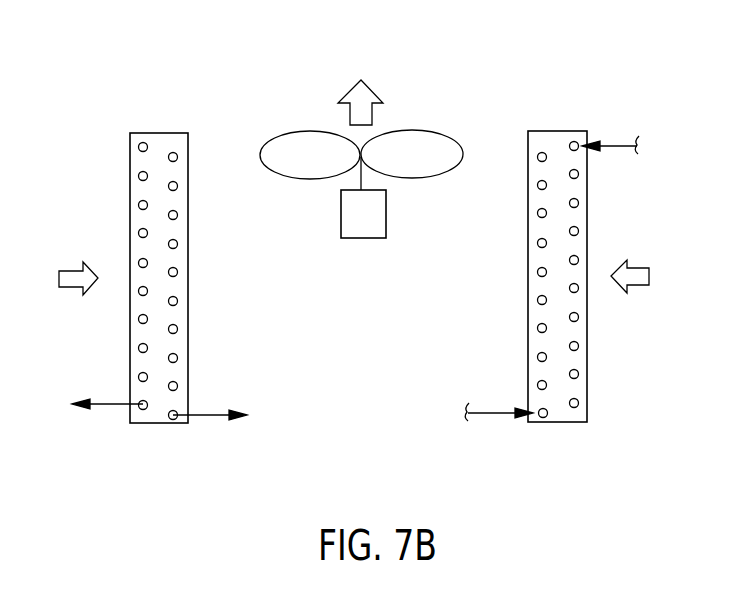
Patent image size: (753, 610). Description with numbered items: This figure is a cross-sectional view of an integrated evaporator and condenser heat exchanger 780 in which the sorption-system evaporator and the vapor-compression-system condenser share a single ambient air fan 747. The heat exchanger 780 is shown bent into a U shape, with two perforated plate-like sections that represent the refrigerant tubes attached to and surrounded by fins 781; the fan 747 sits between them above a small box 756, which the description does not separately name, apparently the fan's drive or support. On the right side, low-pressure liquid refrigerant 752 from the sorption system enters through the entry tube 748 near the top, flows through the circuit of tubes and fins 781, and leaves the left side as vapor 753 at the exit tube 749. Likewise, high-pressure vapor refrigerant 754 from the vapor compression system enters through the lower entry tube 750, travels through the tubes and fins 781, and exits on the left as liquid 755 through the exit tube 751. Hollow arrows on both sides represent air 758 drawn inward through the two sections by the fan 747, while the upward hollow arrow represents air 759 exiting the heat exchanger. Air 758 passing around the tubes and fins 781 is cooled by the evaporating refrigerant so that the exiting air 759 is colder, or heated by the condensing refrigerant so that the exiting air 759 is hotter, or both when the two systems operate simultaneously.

The ambient air fan 747 is at (428, 139).
The entry tube 748 is at (572, 143).
The exit tube 749 is at (142, 410).
The entry tube 750 is at (543, 420).
The exit tube 751 is at (175, 420).
The liquid refrigerant 752 is at (617, 142).
The vapor 753 is at (98, 408).
The vapor refrigerant 754 is at (488, 415).
The liquid 755 is at (213, 418).
The fan motor 756 is at (387, 223).
The air 758 is at (72, 290).
The exiting air 759 is at (377, 95).
The integrated heat exchanger 780 is at (588, 238).
The fins 781 is at (157, 132).